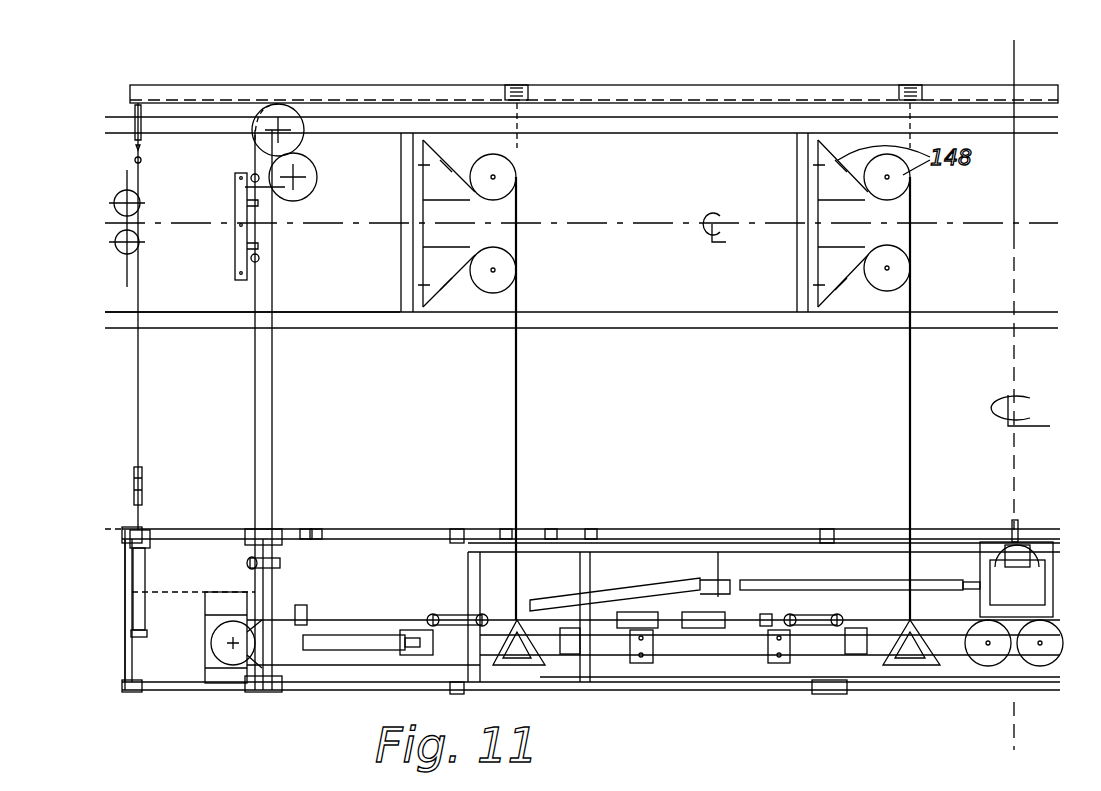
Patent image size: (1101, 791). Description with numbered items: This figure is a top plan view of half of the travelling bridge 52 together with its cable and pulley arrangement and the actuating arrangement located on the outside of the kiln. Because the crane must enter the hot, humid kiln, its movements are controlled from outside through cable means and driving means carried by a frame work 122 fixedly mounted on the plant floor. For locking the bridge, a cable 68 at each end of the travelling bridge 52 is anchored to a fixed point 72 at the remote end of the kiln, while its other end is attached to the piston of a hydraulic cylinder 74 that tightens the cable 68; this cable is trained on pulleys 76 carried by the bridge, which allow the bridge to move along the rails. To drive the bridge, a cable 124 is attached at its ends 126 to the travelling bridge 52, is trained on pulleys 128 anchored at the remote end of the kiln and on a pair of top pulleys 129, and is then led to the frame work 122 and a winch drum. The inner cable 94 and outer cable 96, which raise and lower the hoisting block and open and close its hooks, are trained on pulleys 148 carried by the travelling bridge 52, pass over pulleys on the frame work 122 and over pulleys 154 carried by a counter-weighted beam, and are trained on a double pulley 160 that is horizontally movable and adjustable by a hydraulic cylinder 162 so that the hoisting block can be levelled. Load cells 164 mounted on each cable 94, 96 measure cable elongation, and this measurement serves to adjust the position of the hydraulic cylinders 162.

The travelling bridge 52 is at (218, 332).
The cable 68 is at (135, 408).
The fixed point 72 is at (138, 105).
The hydraulic cylinder 74 is at (140, 570).
The pulleys 76 is at (120, 250).
The inner cable 94 is at (713, 398).
The outer cable 96 is at (518, 390).
The frame work 122 is at (127, 612).
The cable 124 is at (256, 428).
The ends 126 is at (252, 266).
The pulleys 128 is at (292, 145).
The top pulleys 129 is at (280, 558).
The pulleys 148 is at (455, 292).
The pulleys 154 is at (523, 670).
The double pulley 160 is at (233, 653).
The hydraulic cylinder 162 is at (348, 640).
The load cells 164 is at (693, 610).